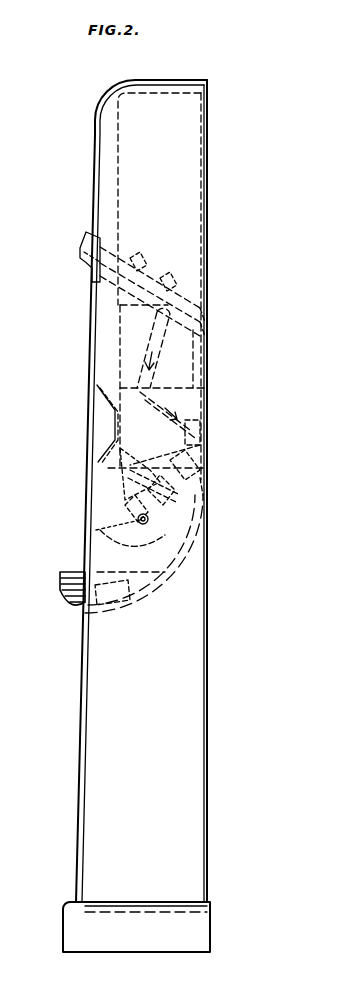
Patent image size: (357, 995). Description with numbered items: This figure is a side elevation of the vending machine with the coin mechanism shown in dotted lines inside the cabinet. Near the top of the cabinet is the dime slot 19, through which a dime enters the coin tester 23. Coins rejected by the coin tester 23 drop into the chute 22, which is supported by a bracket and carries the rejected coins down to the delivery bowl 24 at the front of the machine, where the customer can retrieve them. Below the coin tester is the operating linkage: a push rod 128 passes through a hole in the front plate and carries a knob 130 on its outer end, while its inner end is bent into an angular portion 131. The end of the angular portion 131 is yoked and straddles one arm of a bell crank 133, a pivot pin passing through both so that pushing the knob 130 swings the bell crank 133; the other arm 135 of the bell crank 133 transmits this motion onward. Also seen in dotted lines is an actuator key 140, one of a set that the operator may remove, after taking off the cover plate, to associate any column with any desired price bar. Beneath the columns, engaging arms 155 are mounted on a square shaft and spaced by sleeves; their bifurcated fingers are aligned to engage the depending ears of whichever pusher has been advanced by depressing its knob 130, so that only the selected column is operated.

The dime slot 19 is at (85, 245).
The chute 22 is at (206, 389).
The coin tester 23 is at (196, 362).
The delivery bowl 24 is at (80, 572).
The push rod 128 is at (105, 487).
The knob 130 is at (88, 458).
The angular portion 131 is at (105, 503).
The bell crank 133 is at (110, 520).
The other arm of bell crank 135 is at (96, 530).
The actuator key 140 is at (173, 547).
The engaging arm 155 is at (135, 538).